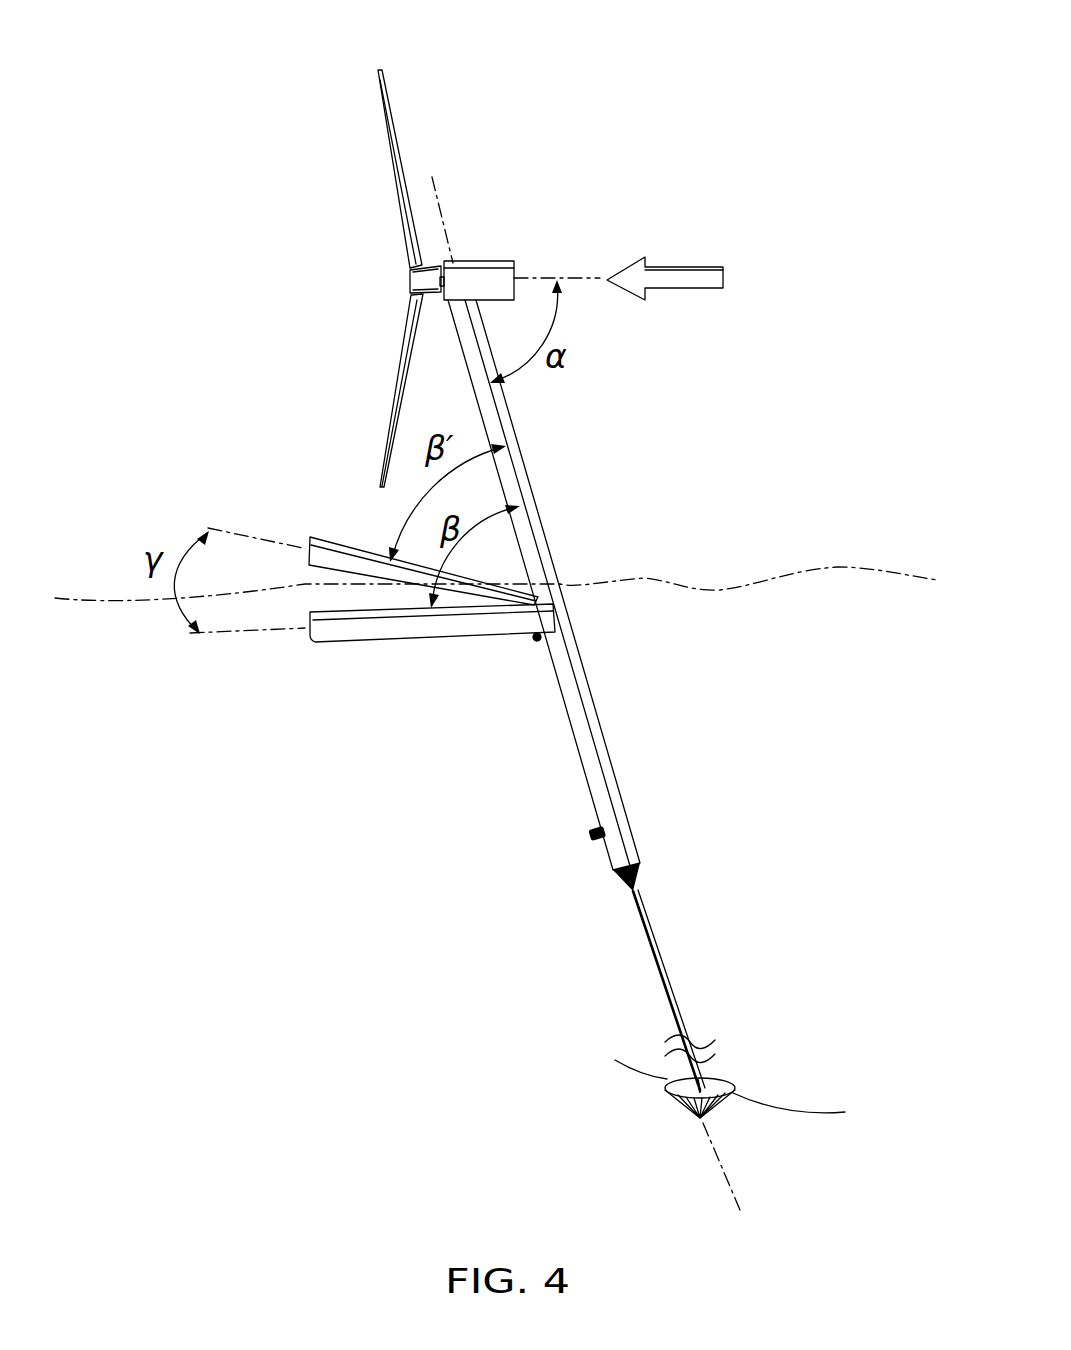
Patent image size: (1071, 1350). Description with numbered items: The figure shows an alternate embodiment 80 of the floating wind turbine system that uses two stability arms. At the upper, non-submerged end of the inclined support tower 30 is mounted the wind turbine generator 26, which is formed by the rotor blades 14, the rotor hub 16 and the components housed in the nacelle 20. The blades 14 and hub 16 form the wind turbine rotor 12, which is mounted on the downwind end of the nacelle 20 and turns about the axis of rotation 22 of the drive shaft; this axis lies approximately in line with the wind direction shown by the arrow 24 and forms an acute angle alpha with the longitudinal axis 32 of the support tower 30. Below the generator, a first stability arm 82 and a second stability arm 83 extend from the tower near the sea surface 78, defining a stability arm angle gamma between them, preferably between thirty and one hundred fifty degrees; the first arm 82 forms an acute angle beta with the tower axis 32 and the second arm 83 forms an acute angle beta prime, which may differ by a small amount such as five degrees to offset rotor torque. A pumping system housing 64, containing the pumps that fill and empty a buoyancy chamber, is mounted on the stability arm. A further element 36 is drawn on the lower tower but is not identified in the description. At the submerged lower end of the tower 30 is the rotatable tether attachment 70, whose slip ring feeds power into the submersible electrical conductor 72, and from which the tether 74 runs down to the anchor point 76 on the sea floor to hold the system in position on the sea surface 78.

The wind turbine rotor 12 is at (316, 253).
The blades 14 is at (392, 139).
The rotor hub 16 is at (436, 296).
The nacelle 20 is at (512, 262).
The axis of rotation 22 is at (581, 284).
The wind direction 24 is at (712, 288).
The wind turbine generator 26 is at (516, 150).
The support tower 30 is at (558, 567).
The longitudinal axis 32 is at (438, 197).
The tower attachment collar 36 is at (596, 843).
The pumping system housing 64 is at (535, 638).
The rotatable tether attachment 70 is at (642, 866).
The submersible electrical conductor 72 is at (665, 968).
The tether 74 is at (656, 965).
The anchor point 76 is at (712, 1068).
The sea surface 78 is at (860, 567).
The floating wind turbine system embodiment 80 is at (637, 122).
The first stability arm 82 is at (372, 645).
The second stability arm 83 is at (365, 541).